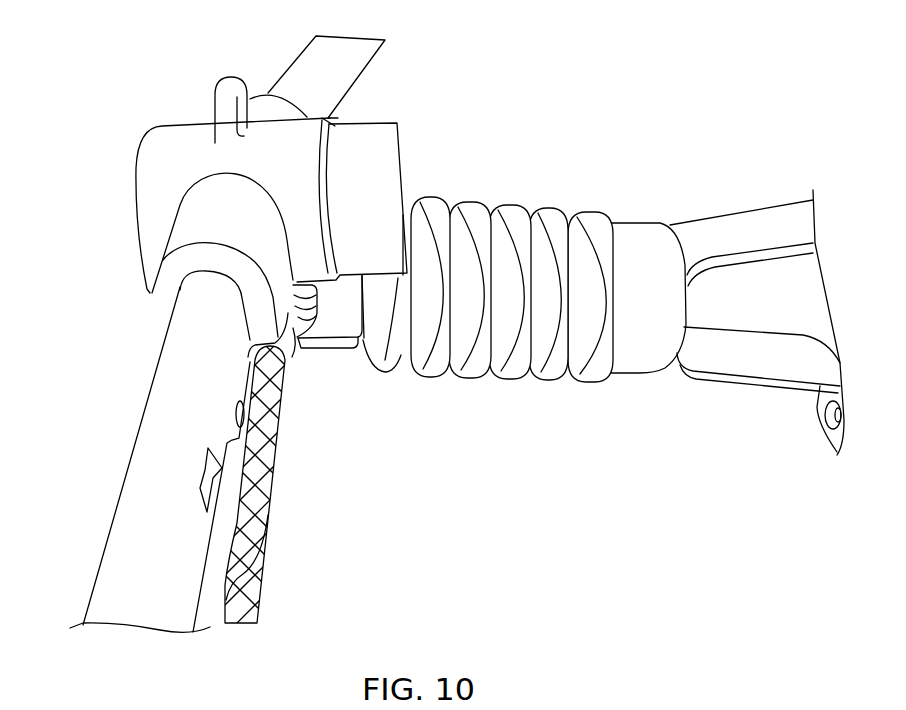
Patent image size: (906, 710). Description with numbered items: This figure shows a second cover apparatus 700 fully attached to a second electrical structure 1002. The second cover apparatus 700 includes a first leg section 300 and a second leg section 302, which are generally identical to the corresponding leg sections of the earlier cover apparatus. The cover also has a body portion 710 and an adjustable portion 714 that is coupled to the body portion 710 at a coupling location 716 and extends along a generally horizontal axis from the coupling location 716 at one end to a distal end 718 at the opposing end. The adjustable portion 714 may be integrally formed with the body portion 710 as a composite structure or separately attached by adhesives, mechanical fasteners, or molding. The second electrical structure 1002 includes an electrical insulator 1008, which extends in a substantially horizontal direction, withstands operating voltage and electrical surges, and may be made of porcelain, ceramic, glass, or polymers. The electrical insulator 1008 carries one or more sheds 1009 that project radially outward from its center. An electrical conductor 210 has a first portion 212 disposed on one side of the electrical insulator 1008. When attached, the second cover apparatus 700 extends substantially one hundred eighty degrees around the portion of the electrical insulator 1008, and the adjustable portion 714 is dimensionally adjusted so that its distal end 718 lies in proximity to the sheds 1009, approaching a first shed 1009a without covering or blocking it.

The second cover apparatus 700 is at (207, 200).
The second leg section 302 is at (296, 66).
The coupling location 716 is at (332, 118).
The adjustable portion 714 is at (428, 151).
The body portion 710 is at (143, 197).
The distal end 718 is at (400, 238).
The second electrical structure 1002 is at (371, 456).
The electrical insulator 1008 is at (609, 408).
The sheds 1009 is at (467, 380).
The first shed 1009a is at (393, 355).
The first leg section 300 is at (100, 560).
The electrical conductor 210 is at (260, 580).
The first portion 212 is at (252, 597).